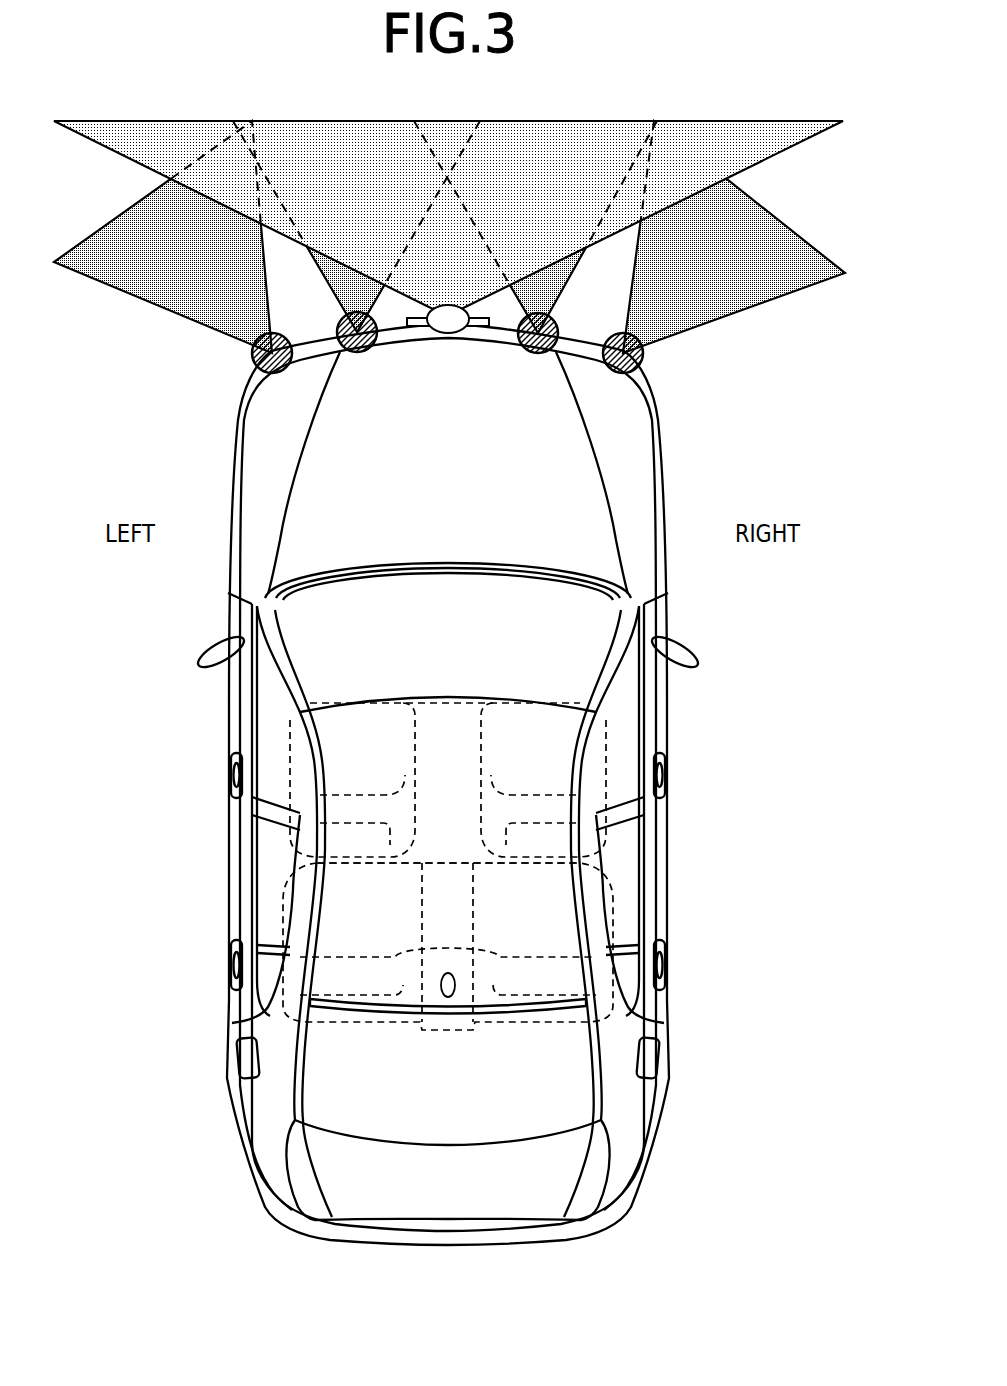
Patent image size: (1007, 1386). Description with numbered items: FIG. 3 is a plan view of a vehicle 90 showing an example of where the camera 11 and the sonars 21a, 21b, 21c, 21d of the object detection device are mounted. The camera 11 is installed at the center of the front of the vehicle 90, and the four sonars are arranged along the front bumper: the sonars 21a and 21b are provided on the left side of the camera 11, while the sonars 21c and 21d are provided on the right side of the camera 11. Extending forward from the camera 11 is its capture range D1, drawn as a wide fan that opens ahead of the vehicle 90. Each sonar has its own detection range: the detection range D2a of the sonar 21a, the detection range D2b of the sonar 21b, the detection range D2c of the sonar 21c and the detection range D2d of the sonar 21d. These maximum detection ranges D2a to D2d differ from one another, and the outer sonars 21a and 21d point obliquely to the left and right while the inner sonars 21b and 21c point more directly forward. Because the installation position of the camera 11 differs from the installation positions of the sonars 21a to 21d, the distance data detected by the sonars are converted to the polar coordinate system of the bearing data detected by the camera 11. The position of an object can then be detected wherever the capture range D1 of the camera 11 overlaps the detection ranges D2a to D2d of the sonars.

The camera 11 is at (447, 337).
The sonar 21a is at (280, 375).
The sonar 21b is at (353, 355).
The sonar 21c is at (538, 355).
The sonar 21d is at (620, 375).
The vehicle 90 is at (225, 465).
The capture range D1 is at (743, 132).
The detection range D2a is at (100, 245).
The detection range D2b is at (347, 283).
The detection range D2c is at (547, 284).
The detection range D2d is at (797, 253).